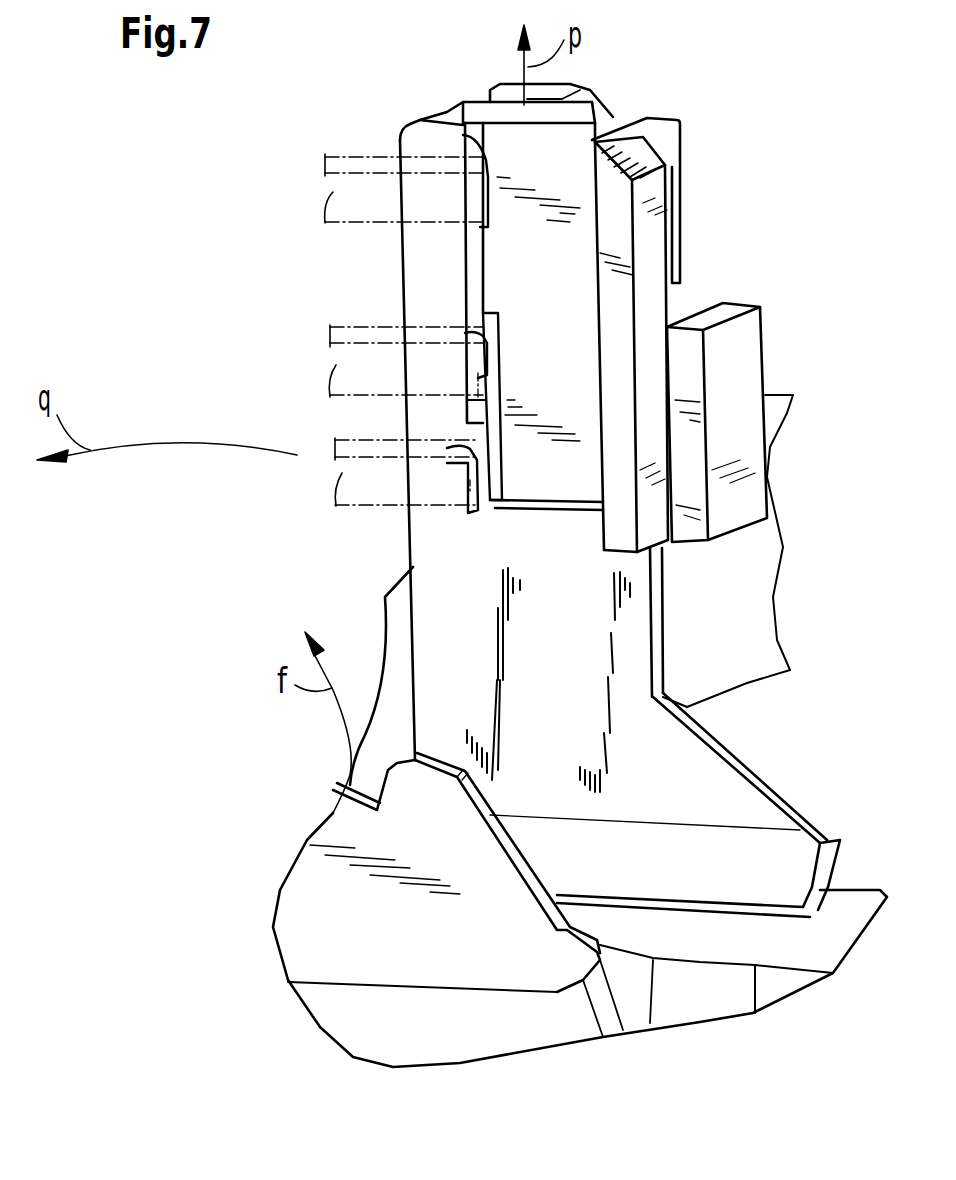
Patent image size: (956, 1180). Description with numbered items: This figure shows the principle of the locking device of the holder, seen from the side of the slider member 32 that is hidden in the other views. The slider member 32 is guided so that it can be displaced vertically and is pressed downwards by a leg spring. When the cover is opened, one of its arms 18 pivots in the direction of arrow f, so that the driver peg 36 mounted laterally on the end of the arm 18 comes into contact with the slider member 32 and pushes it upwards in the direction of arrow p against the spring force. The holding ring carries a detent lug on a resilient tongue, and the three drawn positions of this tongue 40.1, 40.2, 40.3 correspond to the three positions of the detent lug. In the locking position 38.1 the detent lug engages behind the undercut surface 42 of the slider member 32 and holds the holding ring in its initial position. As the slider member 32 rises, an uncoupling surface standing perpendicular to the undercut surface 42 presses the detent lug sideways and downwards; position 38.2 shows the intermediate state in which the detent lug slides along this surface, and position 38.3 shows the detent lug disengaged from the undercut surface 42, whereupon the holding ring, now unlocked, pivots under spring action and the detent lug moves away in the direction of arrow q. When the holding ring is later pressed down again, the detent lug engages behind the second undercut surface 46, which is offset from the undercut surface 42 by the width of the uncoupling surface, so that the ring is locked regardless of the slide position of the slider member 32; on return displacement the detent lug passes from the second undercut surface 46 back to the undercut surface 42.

The arm 18 is at (288, 902).
The slider member 32 is at (458, 615).
The driver peg 36 is at (597, 943).
The locking position of the detent lug 38.1 is at (468, 165).
The intermediate position of the detent lug 38.2 is at (465, 335).
The disengaged position of the detent lug 38.3 is at (450, 449).
The first contact tab (phantom) 40.1 is at (340, 197).
The second contact tab (phantom) 40.2 is at (347, 368).
The third contact tab (phantom) 40.3 is at (350, 483).
The undercut surface 42 is at (470, 152).
The second undercut surface 46 is at (493, 482).